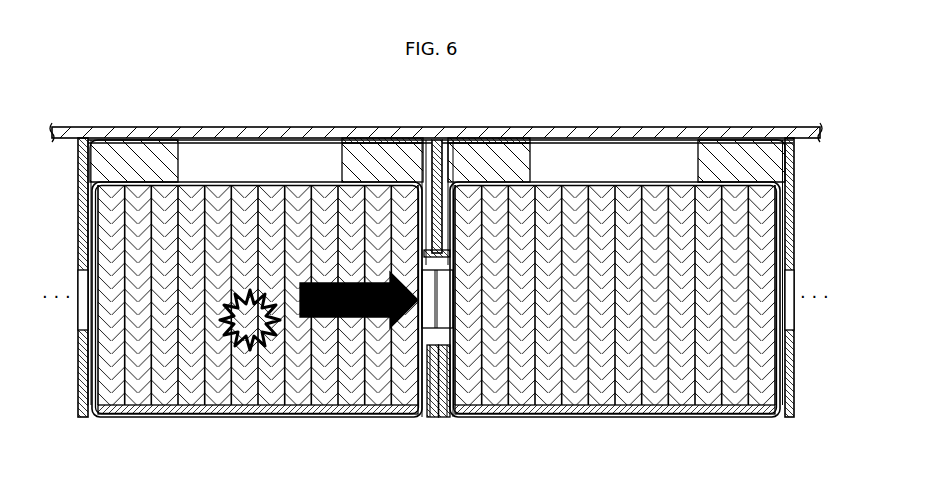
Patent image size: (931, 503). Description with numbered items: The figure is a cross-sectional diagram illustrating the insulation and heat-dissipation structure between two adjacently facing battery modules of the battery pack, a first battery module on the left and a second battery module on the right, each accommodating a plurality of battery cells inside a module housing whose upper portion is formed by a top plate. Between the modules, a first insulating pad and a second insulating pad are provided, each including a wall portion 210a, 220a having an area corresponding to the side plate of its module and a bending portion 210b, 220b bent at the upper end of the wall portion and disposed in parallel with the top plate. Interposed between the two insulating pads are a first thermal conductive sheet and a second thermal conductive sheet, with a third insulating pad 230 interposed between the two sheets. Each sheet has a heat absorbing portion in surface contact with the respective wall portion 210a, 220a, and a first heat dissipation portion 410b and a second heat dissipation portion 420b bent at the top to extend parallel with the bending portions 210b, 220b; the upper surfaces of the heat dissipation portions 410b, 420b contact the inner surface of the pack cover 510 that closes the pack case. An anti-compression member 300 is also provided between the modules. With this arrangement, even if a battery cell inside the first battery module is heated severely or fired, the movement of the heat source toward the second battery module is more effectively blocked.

The wall portion of the first insulating pad 210a is at (428, 418).
The bending portion of the first insulating pad 210b is at (360, 155).
The wall portion of the second insulating pad 220a is at (450, 418).
The bending portion of the second insulating pad 220b is at (512, 157).
The third insulating pad 230 is at (435, 140).
The anti-compression member 300 is at (425, 337).
The first heat dissipation portion 410b is at (378, 140).
The second heat dissipation portion 420b is at (483, 140).
The pack cover 510 is at (725, 138).